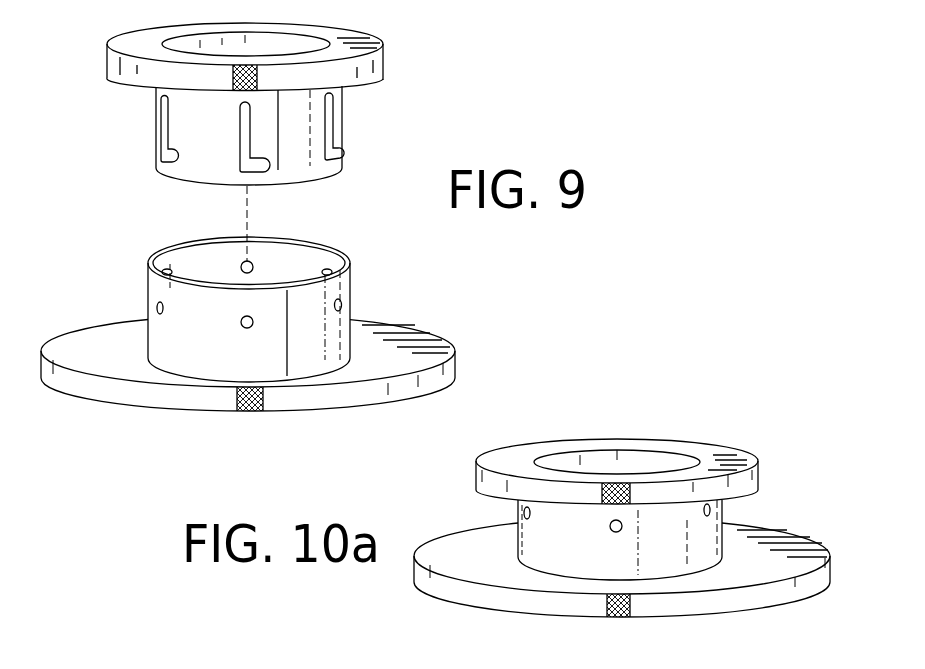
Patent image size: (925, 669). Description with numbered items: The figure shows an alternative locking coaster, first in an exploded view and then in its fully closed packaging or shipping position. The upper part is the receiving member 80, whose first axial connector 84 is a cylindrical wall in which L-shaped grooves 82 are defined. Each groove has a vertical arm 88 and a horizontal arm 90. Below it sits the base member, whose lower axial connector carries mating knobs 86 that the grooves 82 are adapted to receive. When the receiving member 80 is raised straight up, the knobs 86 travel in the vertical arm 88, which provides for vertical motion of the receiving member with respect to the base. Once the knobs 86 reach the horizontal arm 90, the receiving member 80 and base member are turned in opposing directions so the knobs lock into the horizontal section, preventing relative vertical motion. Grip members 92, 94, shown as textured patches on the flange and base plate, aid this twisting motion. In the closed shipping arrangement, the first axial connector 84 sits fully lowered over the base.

In FIG. 9, the receiving member 80 is at (291, 72).
In FIG. 9, the grooves 82 is at (248, 158).
In FIG. 9, the first axial connector 84 is at (248, 154).
In FIG. 9, the mating knobs 86 is at (325, 268).
In FIG. 9, the vertical arm 88 is at (160, 115).
In FIG. 9, the horizontal arm 90 is at (158, 185).
In FIG. 9, the grip member 92 is at (233, 84).
In FIG. 10a, the grip member 92 is at (622, 438).
In FIG. 9, the grip member 94 is at (250, 412).
In FIG. 10a, the grip member 94 is at (618, 617).